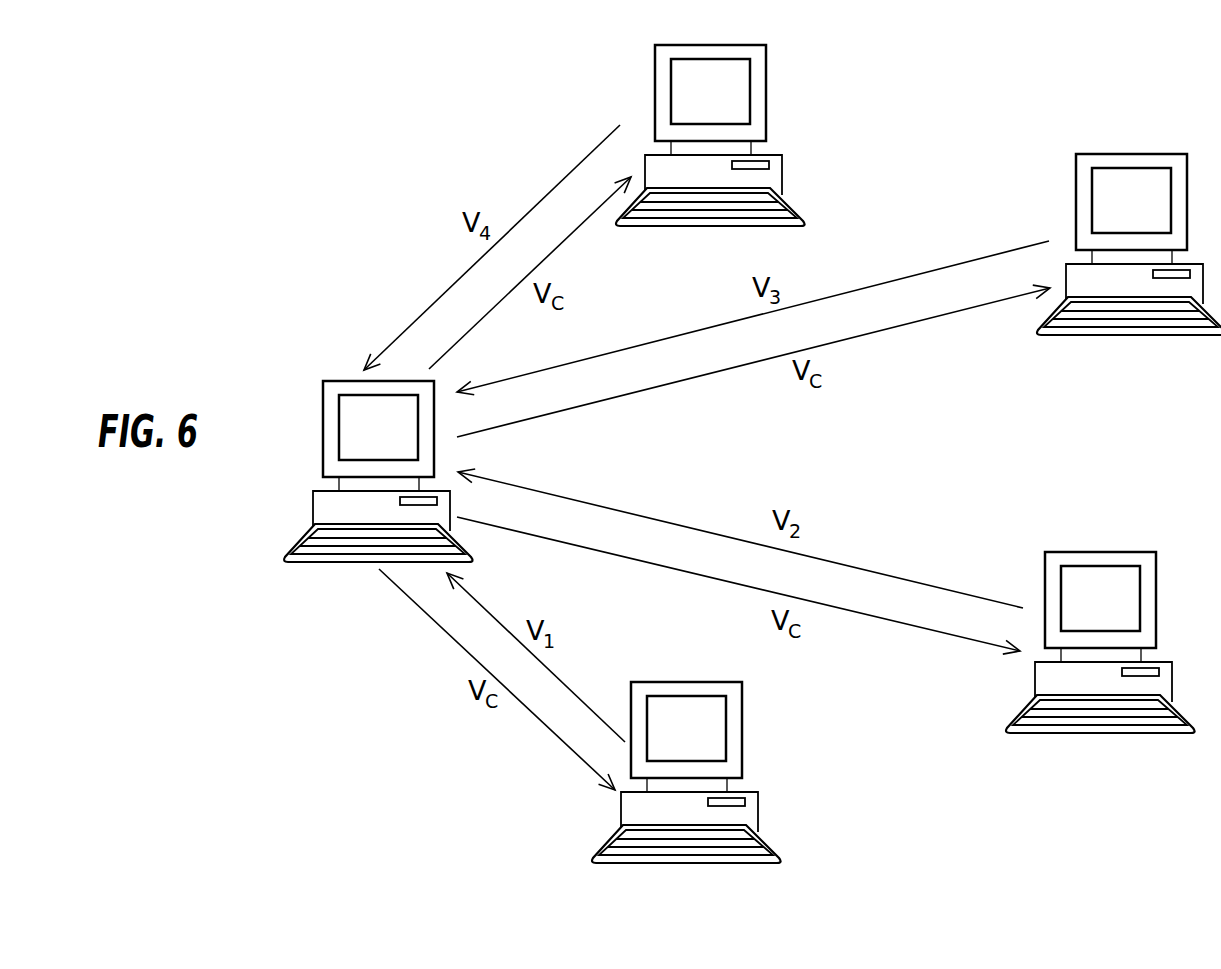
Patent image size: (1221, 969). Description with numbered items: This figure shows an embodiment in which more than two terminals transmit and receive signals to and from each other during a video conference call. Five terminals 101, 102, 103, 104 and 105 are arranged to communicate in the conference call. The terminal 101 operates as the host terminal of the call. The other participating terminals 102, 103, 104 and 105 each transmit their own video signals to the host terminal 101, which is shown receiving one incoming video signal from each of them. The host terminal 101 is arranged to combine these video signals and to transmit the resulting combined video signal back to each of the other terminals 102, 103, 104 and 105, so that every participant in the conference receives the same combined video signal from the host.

The host terminal 101 is at (323, 433).
The terminal 102 is at (686, 682).
The terminal 103 is at (1093, 552).
The terminal 104 is at (1130, 154).
The terminal 105 is at (766, 88).